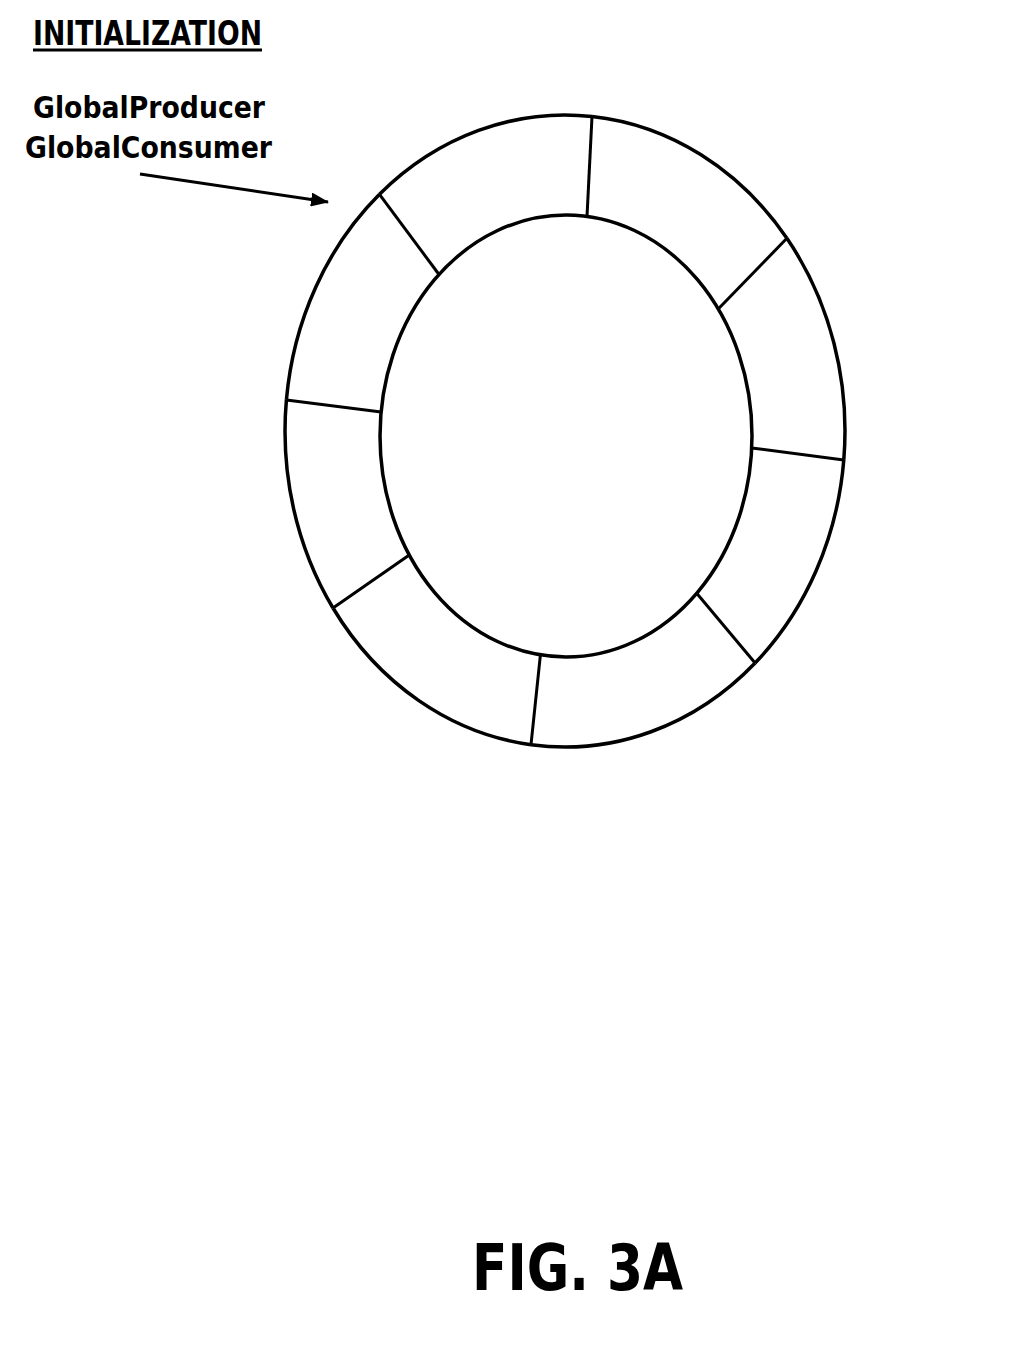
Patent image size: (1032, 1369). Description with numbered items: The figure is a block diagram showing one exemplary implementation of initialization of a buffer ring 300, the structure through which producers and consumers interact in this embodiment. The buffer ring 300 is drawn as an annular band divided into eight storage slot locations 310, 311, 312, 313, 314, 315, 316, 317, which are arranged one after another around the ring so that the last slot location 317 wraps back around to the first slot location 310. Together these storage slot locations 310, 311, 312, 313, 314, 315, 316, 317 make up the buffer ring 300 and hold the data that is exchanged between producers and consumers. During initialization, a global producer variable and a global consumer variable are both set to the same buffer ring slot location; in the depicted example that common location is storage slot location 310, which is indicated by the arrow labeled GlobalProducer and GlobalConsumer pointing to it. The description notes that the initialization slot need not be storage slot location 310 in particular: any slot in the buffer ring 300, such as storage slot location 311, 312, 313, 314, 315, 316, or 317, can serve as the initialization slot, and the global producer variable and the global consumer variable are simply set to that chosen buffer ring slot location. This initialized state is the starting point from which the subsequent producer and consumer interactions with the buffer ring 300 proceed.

The buffer ring 300 is at (597, 452).
The storage slot location 310 is at (296, 343).
The storage slot location 311 is at (301, 550).
The storage slot location 312 is at (452, 723).
The storage slot location 313 is at (686, 721).
The storage slot location 314 is at (783, 635).
The storage slot location 315 is at (849, 409).
The storage slot location 316 is at (763, 188).
The storage slot location 317 is at (513, 116).